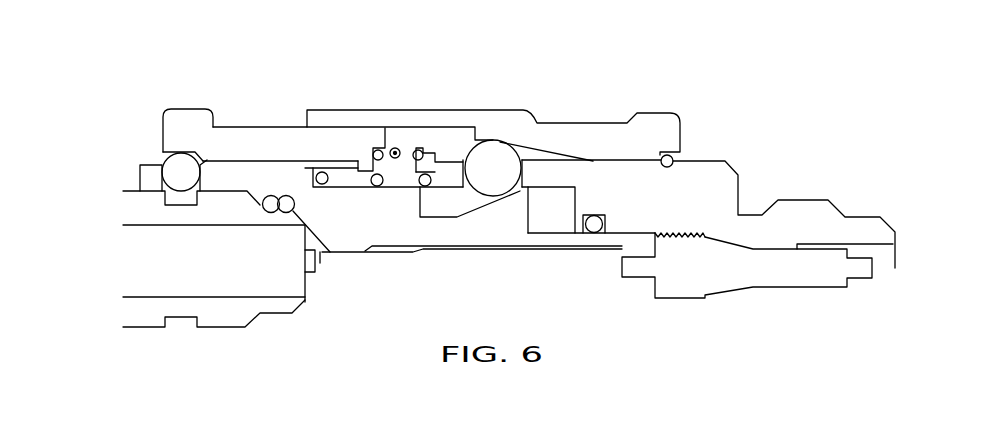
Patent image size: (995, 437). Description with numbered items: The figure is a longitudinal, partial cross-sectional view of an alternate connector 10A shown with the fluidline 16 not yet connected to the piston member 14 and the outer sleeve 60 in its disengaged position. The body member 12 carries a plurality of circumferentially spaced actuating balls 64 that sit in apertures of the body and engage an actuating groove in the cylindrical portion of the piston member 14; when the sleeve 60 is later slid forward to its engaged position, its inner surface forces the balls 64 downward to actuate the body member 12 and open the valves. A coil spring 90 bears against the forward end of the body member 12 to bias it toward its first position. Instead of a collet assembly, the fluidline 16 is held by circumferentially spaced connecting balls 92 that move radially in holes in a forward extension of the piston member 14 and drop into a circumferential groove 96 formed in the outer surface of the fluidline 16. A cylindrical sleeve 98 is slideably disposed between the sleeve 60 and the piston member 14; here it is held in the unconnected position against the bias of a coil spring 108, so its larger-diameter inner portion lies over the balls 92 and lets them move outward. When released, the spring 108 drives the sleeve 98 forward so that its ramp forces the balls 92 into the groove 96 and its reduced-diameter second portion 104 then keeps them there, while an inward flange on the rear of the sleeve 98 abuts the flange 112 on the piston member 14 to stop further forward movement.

The connector 10A is at (768, 81).
The body member 12 is at (766, 194).
The piston member 14 is at (399, 224).
The fluidline 16 is at (120, 206).
The sleeve 60 is at (588, 137).
The actuating balls 64 is at (498, 152).
The coil spring 90 is at (428, 185).
The connecting balls 92 is at (178, 165).
The circumferential groove 96 is at (180, 320).
The cylindrical sleeve 98 is at (240, 145).
The second portion 104 is at (340, 163).
The coil spring 108 is at (396, 152).
The flange 112 is at (315, 173).